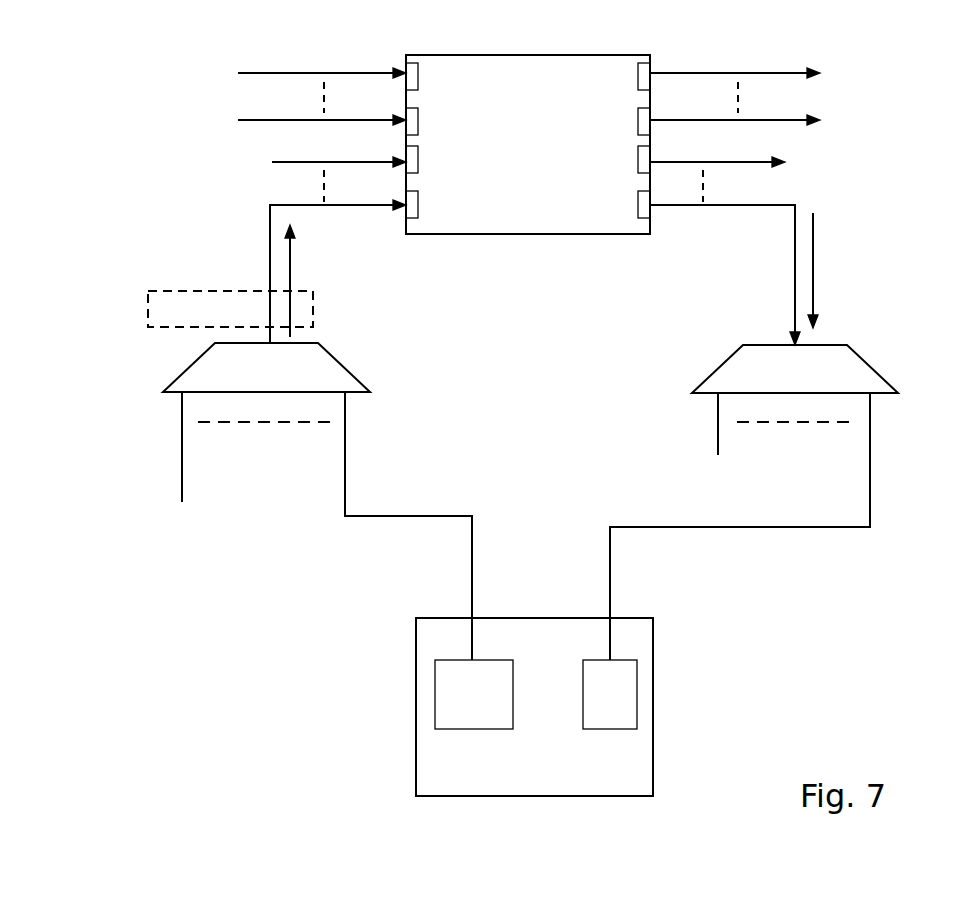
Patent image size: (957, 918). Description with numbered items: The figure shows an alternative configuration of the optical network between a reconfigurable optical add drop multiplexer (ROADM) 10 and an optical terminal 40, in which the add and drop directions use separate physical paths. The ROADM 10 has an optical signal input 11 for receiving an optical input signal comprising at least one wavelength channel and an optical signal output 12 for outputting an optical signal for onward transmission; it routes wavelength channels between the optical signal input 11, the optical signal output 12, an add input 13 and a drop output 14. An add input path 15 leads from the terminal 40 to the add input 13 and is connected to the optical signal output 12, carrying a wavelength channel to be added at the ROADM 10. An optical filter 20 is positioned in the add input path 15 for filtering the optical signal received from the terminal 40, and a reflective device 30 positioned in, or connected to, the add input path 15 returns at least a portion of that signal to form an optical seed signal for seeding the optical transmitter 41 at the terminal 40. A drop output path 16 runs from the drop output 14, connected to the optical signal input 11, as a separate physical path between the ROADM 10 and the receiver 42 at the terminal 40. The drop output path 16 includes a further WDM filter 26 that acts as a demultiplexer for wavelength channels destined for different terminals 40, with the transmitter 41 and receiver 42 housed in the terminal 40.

The reconfigurable optical add drop multiplexer (ROADM) 10 is at (516, 55).
The optical signal input 11 is at (406, 63).
The optical signal output 12 is at (652, 63).
The add input 13 is at (406, 220).
The drop output 14 is at (652, 218).
The add input path 15 is at (268, 228).
The drop output path 16 is at (795, 245).
The optical filter 20 is at (343, 368).
The further WDM filter 26 is at (870, 362).
The reflective device 30 is at (148, 308).
The optical terminal 40 is at (416, 655).
The optical transmitter 41 is at (435, 710).
The receiver 42 is at (637, 702).